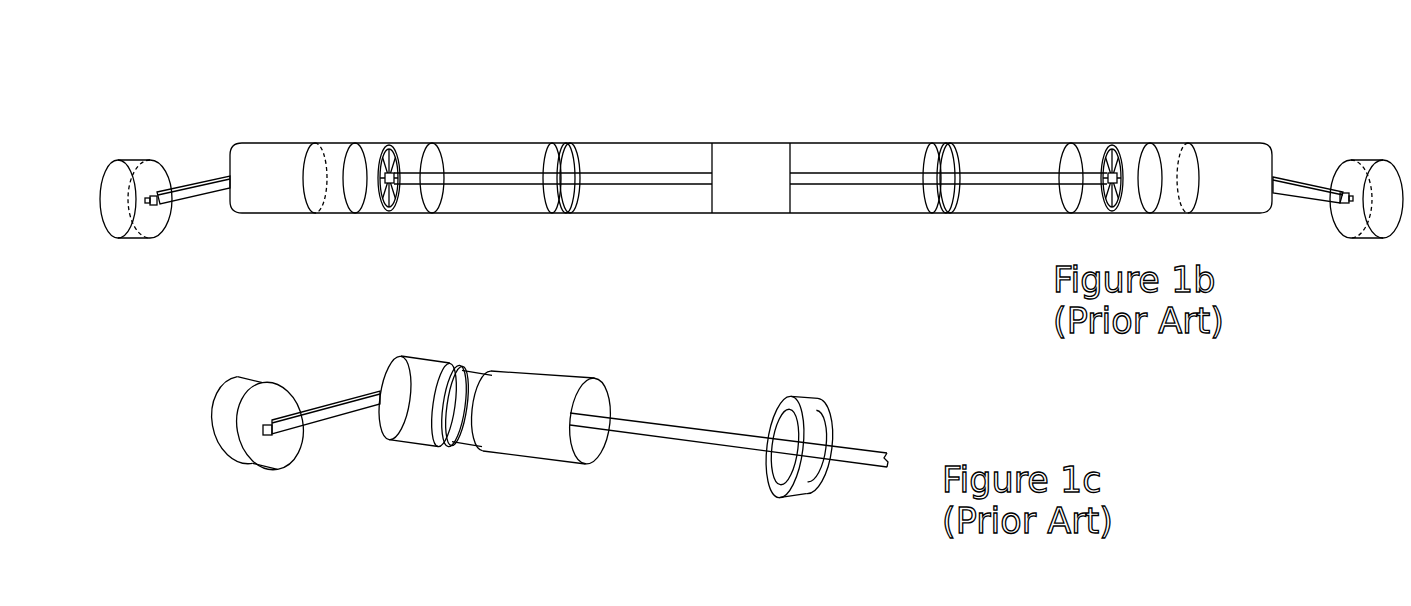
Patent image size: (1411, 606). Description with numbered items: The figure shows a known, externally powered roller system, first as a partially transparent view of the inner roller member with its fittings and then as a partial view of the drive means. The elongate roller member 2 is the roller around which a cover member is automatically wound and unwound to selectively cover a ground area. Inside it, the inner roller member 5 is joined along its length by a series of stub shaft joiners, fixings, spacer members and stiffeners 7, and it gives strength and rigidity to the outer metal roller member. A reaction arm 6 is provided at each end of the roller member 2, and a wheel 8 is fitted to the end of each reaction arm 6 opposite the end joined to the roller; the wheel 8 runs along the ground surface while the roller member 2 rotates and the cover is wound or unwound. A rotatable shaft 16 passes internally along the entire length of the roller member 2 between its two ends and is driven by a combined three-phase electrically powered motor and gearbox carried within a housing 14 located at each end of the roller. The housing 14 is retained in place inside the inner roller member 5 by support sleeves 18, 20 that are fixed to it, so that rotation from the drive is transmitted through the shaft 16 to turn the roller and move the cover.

In FIG. 1B, the elongate roller member 2 is at (751, 159).
In FIG. 1B, the inner roller member 5 is at (880, 143).
In FIG. 1B, the reaction arm 6 is at (197, 192).
In FIG. 1C, the reaction arm 6 is at (335, 415).
In FIG. 1B, the stiffener 7 is at (567, 155).
In FIG. 1C, the stiffener 7 is at (807, 408).
In FIG. 1B, the wheel 8 is at (123, 172).
In FIG. 1C, the wheel 8 is at (222, 435).
In FIG. 1C, the housing 14 is at (470, 425).
In FIG. 1B, the rotatable shaft 16 is at (497, 176).
In FIG. 1C, the rotatable shaft 16 is at (680, 432).
In FIG. 1C, the support sleeve 18 is at (432, 372).
In FIG. 1C, the support sleeve 20 is at (550, 427).